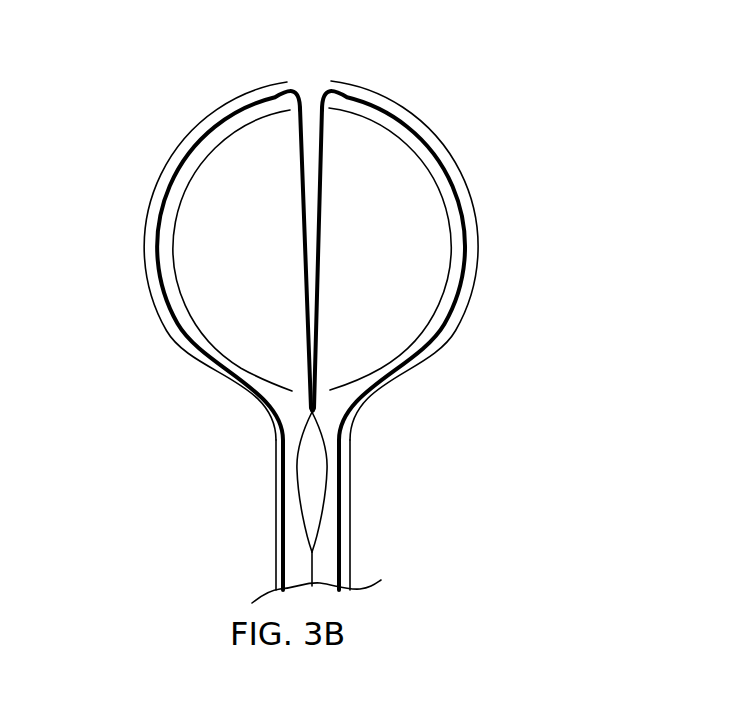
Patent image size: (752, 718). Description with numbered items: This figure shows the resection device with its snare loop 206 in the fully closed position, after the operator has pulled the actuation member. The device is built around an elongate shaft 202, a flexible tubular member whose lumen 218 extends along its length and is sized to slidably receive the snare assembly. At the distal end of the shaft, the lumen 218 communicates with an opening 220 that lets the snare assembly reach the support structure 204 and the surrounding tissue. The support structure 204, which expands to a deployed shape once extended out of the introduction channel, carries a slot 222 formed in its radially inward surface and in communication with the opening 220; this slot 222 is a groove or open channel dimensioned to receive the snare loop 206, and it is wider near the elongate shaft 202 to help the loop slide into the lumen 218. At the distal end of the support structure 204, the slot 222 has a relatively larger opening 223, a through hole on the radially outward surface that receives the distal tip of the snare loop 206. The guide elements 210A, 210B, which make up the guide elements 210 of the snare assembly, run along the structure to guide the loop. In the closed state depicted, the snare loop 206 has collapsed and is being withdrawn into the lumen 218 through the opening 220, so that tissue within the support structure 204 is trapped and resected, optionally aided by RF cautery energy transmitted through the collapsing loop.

The elongate shaft 202 is at (350, 508).
The support structure 204 is at (467, 188).
The snare loop 206 is at (298, 452).
The guide element 210 is at (304, 72).
The guide element 210A is at (218, 124).
The guide element 210B is at (403, 121).
The lumen 218 is at (270, 516).
The opening 220 is at (340, 408).
The slot 222 is at (450, 267).
The opening 223 is at (337, 67).